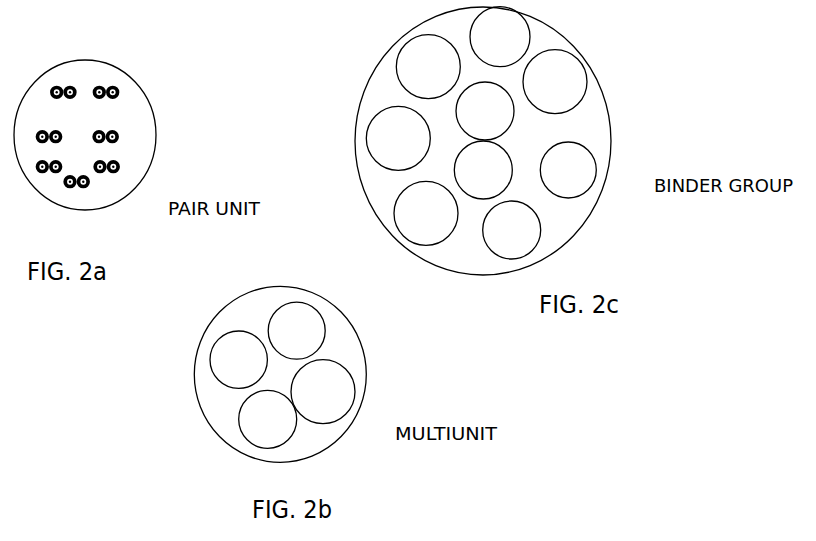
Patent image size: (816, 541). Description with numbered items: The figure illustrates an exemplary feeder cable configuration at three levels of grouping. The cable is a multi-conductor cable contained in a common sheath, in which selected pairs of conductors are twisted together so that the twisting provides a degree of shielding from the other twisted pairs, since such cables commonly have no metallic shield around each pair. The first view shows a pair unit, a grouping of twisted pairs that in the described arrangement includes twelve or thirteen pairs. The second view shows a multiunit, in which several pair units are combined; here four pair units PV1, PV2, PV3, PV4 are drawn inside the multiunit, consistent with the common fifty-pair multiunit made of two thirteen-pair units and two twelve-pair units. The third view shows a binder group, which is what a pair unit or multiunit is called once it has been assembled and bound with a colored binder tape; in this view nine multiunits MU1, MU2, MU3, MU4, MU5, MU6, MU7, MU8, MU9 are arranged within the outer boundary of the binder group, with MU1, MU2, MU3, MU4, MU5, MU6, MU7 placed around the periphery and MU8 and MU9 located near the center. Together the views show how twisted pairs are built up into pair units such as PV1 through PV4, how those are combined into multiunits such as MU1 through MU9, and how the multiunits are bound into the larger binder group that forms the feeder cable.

In FIG. 2B, the pair unit 1 of multiunit PV1 is at (238, 359).
In FIG. 2B, the pair unit 2 of multiunit PV2 is at (296, 330).
In FIG. 2B, the pair unit 3 of multiunit PV3 is at (323, 392).
In FIG. 2B, the pair unit 4 of multiunit PV4 is at (268, 419).
In FIG. 2C, the multiunit 1 of binder group MU1 is at (398, 138).
In FIG. 2C, the multiunit 2 of binder group MU2 is at (426, 213).
In FIG. 2C, the multiunit 3 of binder group MU3 is at (512, 230).
In FIG. 2C, the multiunit 4 of binder group MU4 is at (568, 170).
In FIG. 2C, the multiunit 5 of binder group MU5 is at (555, 82).
In FIG. 2C, the multiunit 6 of binder group MU6 is at (500, 37).
In FIG. 2C, the multiunit 7 of binder group MU7 is at (428, 67).
In FIG. 2C, the multiunit 8 of binder group MU8 is at (485, 111).
In FIG. 2C, the multiunit 9 of binder group MU9 is at (483, 170).